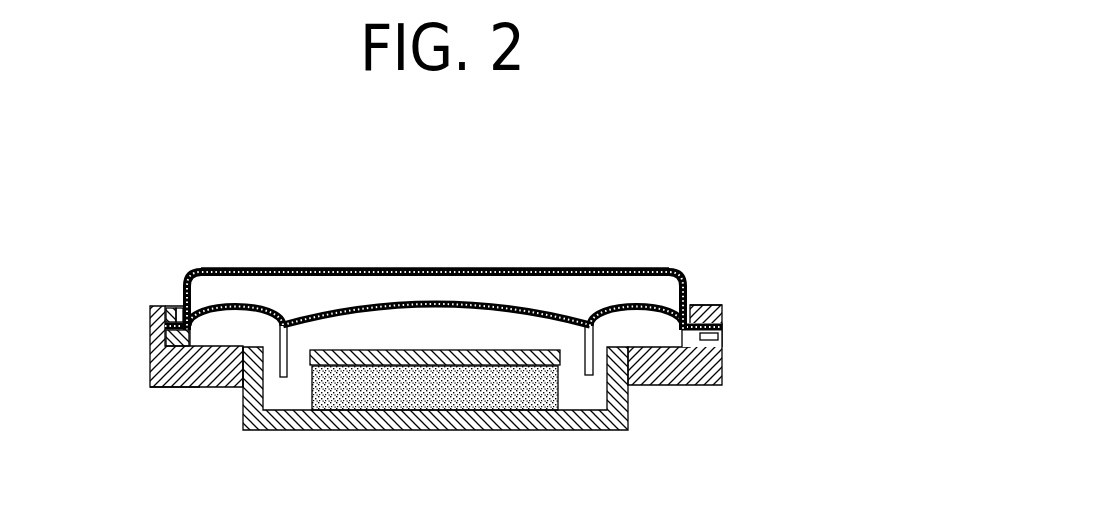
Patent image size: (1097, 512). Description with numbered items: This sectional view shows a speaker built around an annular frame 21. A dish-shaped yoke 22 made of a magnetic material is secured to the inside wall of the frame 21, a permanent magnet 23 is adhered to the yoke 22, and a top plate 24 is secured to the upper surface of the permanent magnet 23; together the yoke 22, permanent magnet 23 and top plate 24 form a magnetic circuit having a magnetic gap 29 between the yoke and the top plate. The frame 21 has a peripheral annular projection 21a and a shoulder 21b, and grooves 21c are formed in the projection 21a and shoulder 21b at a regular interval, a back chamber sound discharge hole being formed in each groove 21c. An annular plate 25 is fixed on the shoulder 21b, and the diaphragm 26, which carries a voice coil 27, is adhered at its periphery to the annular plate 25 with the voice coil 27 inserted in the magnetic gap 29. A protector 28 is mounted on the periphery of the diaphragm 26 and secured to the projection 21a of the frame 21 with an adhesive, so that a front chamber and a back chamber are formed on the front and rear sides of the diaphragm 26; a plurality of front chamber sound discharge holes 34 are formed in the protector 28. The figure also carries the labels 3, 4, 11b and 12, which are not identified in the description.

The diaphragm 3 is at (488, 329).
The speaker unit 4 is at (343, 297).
The housing upper portion 11b is at (702, 303).
The adhesive 12 is at (175, 305).
The annular frame 21 is at (208, 387).
The peripheral annular projection 21a is at (166, 313).
The shoulder 21b is at (170, 387).
The groove 21c is at (722, 340).
The yoke 22 is at (615, 430).
The permanent magnet 23 is at (455, 390).
The top plate 24 is at (467, 350).
The annular plate 25 is at (170, 342).
The diaphragm 26 is at (578, 270).
The voice coil 27 is at (273, 368).
The protector 28 is at (310, 270).
The magnetic gap 29 is at (247, 413).
The front chamber sound discharge hole 34 is at (562, 315).